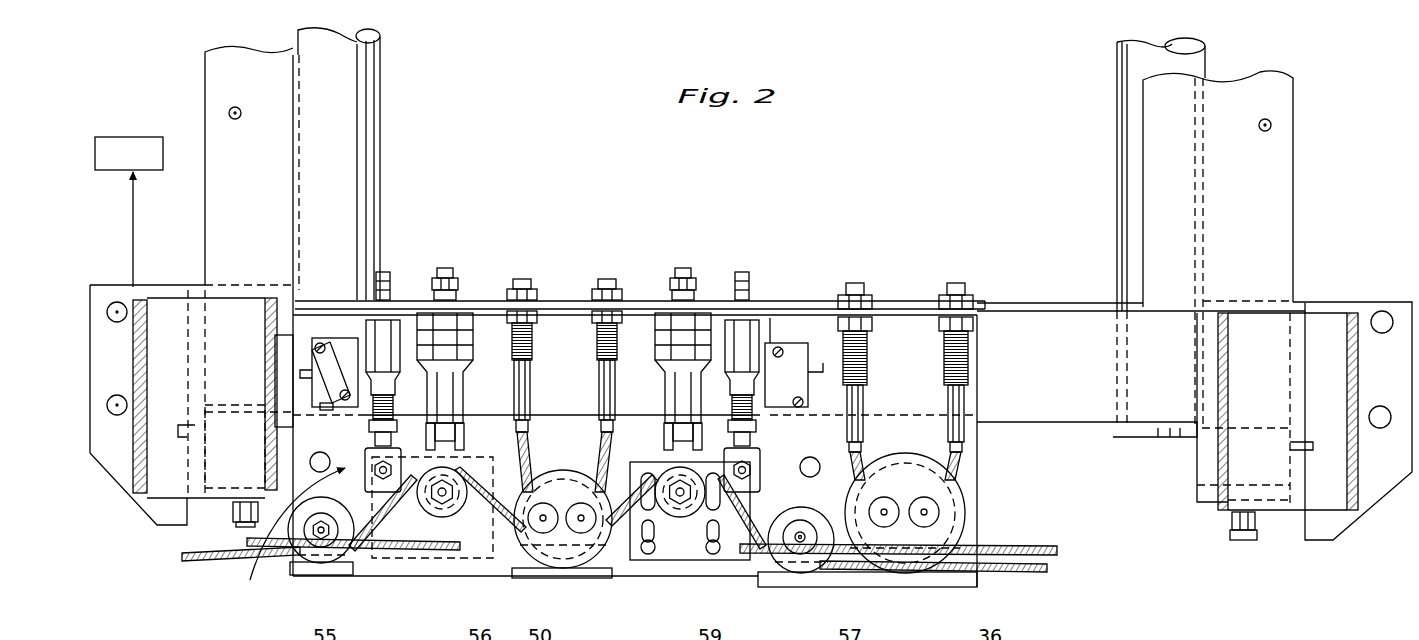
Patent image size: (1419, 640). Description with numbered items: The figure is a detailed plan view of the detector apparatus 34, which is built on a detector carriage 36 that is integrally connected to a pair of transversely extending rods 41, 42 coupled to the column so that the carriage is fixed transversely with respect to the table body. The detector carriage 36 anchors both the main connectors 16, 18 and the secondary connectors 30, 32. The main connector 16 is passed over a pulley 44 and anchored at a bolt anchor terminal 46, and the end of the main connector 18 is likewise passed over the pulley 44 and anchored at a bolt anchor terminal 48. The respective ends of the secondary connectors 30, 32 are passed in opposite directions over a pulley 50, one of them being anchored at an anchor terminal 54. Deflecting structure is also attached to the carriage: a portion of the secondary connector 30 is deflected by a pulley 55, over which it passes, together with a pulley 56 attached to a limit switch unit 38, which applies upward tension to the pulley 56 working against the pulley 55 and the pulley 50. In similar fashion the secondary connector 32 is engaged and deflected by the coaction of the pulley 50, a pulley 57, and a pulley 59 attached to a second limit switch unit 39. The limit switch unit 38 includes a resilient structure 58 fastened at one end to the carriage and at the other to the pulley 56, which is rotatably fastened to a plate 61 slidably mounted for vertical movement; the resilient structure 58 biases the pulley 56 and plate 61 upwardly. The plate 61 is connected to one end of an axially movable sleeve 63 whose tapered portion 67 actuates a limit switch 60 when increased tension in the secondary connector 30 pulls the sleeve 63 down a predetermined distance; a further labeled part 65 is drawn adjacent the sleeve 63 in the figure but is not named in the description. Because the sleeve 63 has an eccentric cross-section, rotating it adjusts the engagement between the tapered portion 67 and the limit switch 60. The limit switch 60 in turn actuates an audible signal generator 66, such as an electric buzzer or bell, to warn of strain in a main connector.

The main connector 16 is at (360, 563).
The main connector 18 is at (1032, 545).
The secondary connector 30 is at (206, 560).
The secondary connector 32 is at (1032, 567).
The detector apparatus 34 is at (763, 261).
The detector carriage 36 is at (1405, 300).
The limit switch unit 38 is at (284, 534).
The limit switch unit 39 is at (646, 350).
The rod 41 is at (206, 87).
The rod 42 is at (1297, 140).
The pulley 44 is at (967, 503).
The bolt anchor terminal 46 is at (976, 300).
The bolt anchor terminal 48 is at (872, 300).
The pulley 50 is at (594, 560).
The anchor terminal 54 is at (507, 295).
The pulley 55 is at (342, 565).
The pulley 56 is at (413, 503).
The pulley 57 is at (784, 566).
The resilient structure 58 is at (465, 402).
The pulley 59 is at (700, 527).
The limit switch 60 is at (286, 308).
The plate 61 is at (470, 563).
The sleeve 63 is at (369, 406).
The tension post 65 is at (400, 312).
The audible signal generator 66 is at (128, 136).
The tapered portion 67 is at (370, 326).